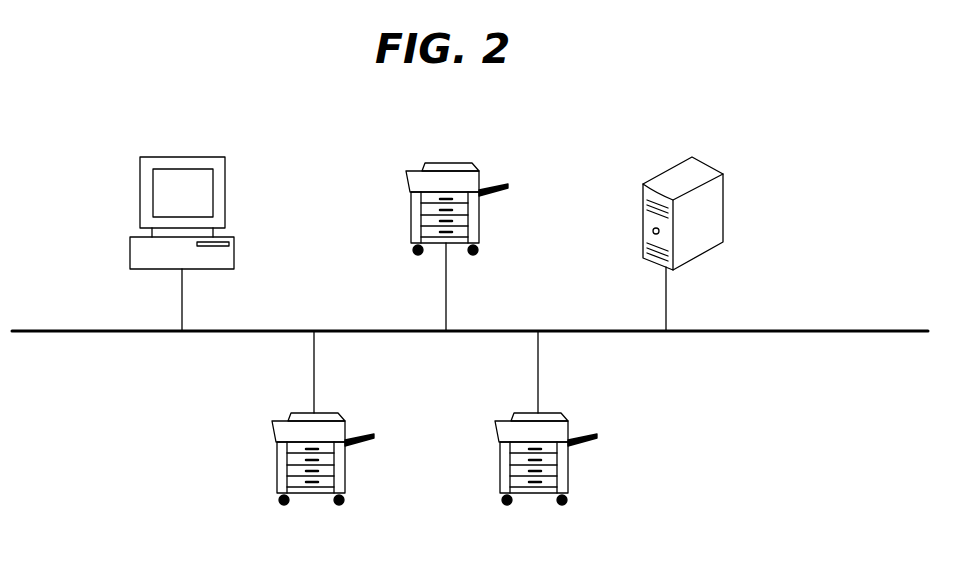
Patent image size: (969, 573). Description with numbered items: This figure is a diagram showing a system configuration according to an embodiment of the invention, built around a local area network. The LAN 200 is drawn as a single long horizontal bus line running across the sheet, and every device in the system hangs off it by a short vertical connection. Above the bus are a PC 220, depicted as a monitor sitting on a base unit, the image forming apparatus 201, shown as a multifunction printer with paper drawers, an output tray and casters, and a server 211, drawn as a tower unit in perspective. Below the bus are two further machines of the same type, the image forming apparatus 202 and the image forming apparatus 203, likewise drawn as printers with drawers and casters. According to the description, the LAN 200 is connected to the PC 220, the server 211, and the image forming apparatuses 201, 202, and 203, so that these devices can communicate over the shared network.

The LAN 200 is at (868, 331).
The image forming apparatus 201 is at (411, 208).
The image forming apparatus 202 is at (277, 466).
The image forming apparatus 203 is at (495, 467).
The server 211 is at (643, 209).
The PC 220 is at (140, 184).